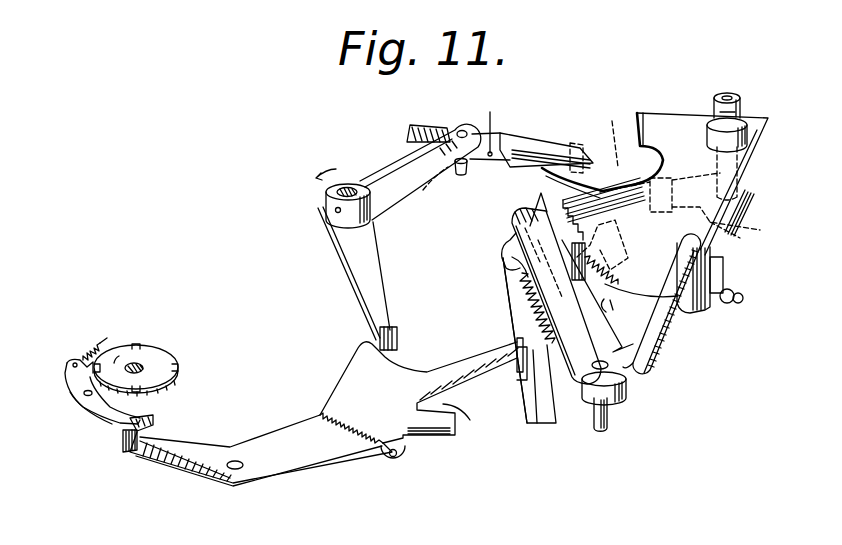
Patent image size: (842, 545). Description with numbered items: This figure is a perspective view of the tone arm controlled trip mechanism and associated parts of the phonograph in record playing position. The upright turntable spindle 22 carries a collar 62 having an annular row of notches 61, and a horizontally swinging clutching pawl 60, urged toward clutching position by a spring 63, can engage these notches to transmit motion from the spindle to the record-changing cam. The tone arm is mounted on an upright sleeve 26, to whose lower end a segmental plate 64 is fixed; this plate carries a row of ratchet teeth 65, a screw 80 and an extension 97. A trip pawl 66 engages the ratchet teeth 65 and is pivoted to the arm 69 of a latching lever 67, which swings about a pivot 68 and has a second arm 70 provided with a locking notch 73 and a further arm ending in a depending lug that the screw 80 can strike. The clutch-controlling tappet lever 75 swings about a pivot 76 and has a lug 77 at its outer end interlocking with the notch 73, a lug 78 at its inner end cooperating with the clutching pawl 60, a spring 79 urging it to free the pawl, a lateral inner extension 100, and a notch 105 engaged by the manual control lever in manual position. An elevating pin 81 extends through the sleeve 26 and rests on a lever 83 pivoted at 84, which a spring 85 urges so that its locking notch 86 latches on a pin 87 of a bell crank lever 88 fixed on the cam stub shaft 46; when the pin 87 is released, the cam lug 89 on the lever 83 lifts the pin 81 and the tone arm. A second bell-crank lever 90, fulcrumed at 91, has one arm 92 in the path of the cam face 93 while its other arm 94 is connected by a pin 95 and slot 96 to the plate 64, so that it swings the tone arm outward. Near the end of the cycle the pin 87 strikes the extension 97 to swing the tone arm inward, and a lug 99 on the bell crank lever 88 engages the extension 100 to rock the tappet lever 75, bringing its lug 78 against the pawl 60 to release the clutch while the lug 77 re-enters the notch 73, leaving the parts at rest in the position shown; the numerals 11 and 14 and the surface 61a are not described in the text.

The frame 11 is at (602, 245).
The spring 14 is at (631, 284).
The upright spindle 22 is at (143, 369).
The upright sleeve 26 is at (748, 118).
The cam stub shaft 46 is at (327, 200).
The clutching pawl 60 is at (68, 389).
The notches 61 is at (141, 344).
The surface 61a is at (598, 296).
The collar 62 is at (162, 387).
The spring 63 is at (101, 334).
The segmental plate 64 is at (655, 184).
The ratchet teeth 65 is at (598, 193).
The trip pawl 66 is at (540, 199).
The latching lever 67 is at (511, 313).
The pivot 68 is at (520, 290).
The arm 69 is at (503, 256).
The arm 70 is at (546, 418).
The locking notch 73 is at (521, 386).
The clutch-controlling tappet lever 75 is at (267, 450).
The pivot 76 is at (235, 470).
The lug 77 is at (505, 344).
The lug 78 is at (126, 446).
The spring 79 is at (321, 414).
The screw 80 is at (733, 304).
The elevating pin 81 is at (741, 107).
The lever 83 is at (520, 140).
The pivot 84 is at (613, 132).
The spring 85 is at (668, 190).
The locking notch 86 is at (461, 175).
The pin 87 is at (424, 194).
The bell crank lever 88 is at (398, 164).
The elevating cam lug 89 is at (725, 237).
The bell-crank lever 90 is at (621, 386).
The fulcrum 91 is at (611, 420).
The arm 92 is at (560, 296).
The cam face 93 is at (488, 124).
The arm 94 is at (657, 327).
The pin 95 is at (723, 268).
The slot 96 is at (697, 311).
The extension 97 is at (560, 147).
The lug 99 is at (399, 333).
The inner extension 100 is at (364, 350).
The notch 105 is at (452, 427).